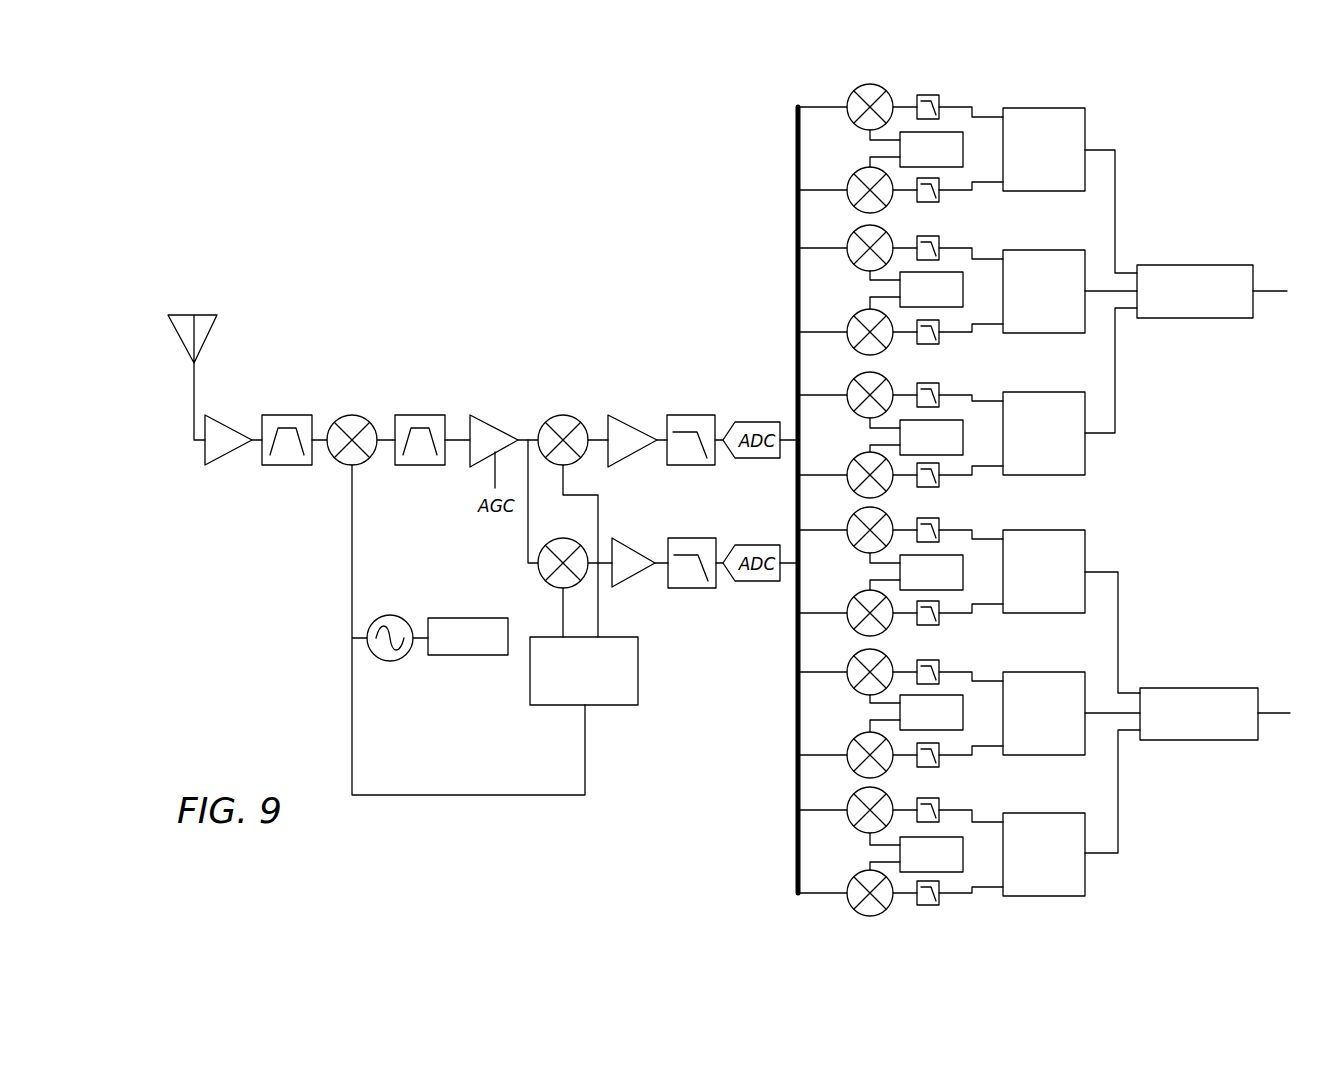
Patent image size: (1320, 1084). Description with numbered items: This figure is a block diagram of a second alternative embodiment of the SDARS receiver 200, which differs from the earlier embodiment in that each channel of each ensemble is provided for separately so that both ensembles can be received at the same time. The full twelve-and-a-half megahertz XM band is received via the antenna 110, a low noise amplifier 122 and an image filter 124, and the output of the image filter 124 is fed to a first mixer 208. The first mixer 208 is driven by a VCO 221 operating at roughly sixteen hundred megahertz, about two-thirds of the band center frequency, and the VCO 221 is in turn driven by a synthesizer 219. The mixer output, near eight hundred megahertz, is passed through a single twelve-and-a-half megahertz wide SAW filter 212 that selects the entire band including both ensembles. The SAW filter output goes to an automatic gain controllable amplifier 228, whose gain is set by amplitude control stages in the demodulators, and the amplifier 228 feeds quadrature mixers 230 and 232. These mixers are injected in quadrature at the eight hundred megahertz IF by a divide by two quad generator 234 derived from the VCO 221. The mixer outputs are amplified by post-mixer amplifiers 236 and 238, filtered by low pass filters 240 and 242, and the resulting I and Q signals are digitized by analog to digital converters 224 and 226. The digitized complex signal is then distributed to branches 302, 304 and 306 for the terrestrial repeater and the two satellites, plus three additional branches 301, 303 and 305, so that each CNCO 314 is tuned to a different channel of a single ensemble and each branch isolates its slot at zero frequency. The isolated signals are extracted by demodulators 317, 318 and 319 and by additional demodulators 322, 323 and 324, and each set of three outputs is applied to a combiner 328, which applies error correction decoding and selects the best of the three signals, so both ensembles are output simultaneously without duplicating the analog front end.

The antenna 110 is at (159, 340).
The low noise amplifier 122 is at (193, 459).
The image filter 124 is at (282, 465).
The first mixer 208 is at (325, 418).
The SAW filter 212 is at (390, 397).
The automatic gain controllable (AGC) amplifier 228 is at (501, 404).
The quadrature mixer 230 is at (568, 403).
The quadrature mixer 232 is at (532, 567).
The post-mixer amplifier 236 is at (637, 404).
The post-mixer amplifier 238 is at (653, 592).
The low pass filter 240 is at (694, 403).
The low pass filter 242 is at (701, 594).
The analog to digital converter 224 is at (756, 399).
The analog to digital converter 226 is at (759, 596).
The VCO 221 is at (406, 647).
The synthesizer 219 is at (468, 657).
The divide by 2 quad generator 234 is at (611, 688).
The receiver 200 is at (292, 254).
The branch 306 is at (833, 487).
The branch 304 is at (848, 285).
The branch 302 is at (850, 395).
The additional branch 301 is at (876, 619).
The additional branch 303 is at (864, 713).
The additional branch 305 is at (859, 851).
The complex numerically controlled oscillator (CNCO) 314 is at (967, 106).
The demodulator 317 is at (1094, 190).
The demodulator 318 is at (1096, 275).
The demodulator 319 is at (1100, 391).
The additional demodulator 322 is at (1098, 611).
The additional demodulator 323 is at (1095, 691).
The additional demodulator 324 is at (1099, 813).
The combiner 328 is at (1213, 479).